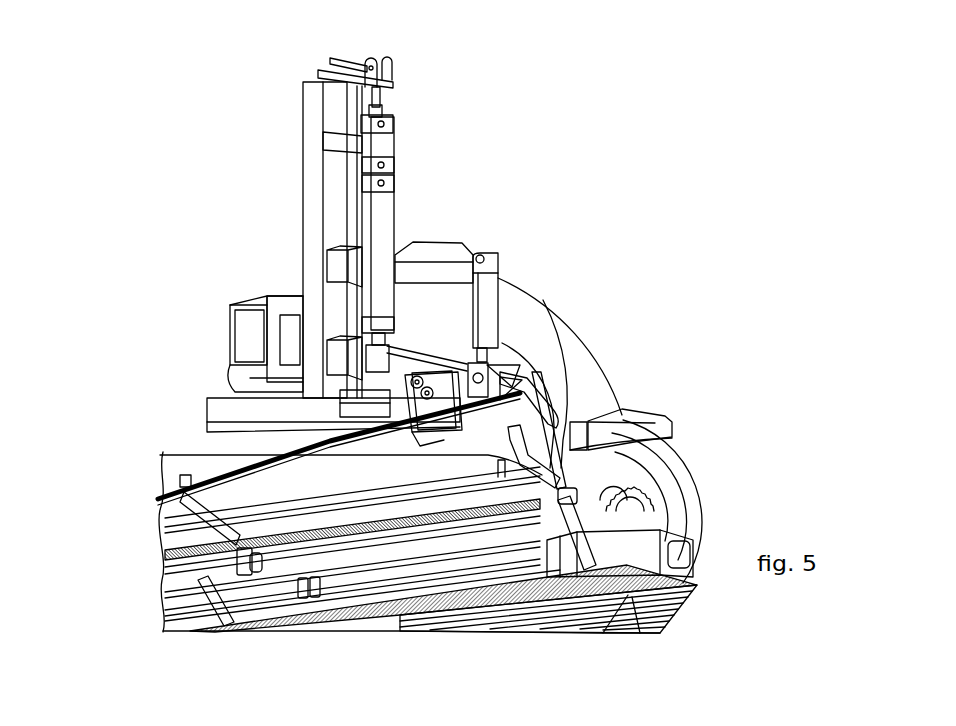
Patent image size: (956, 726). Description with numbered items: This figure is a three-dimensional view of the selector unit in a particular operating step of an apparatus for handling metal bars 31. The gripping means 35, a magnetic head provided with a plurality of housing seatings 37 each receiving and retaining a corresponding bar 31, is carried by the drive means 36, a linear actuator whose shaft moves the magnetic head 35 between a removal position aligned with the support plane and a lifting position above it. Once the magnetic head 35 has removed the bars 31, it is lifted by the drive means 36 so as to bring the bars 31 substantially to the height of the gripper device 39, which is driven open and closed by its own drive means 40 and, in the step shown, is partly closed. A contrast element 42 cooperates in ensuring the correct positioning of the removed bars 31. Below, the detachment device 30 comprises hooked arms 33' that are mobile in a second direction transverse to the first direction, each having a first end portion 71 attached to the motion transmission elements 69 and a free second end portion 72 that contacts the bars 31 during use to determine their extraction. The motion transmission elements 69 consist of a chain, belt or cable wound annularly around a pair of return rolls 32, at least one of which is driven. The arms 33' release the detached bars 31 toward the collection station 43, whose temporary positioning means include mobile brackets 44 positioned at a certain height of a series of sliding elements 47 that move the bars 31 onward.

The detachment device 30 is at (141, 538).
The bars 31 is at (220, 482).
The return rolls 32 is at (640, 521).
The arms 33' is at (375, 461).
The gripping means 35 is at (385, 437).
The drive means 36 is at (384, 225).
The housing seatings 37 is at (404, 172).
The gripper device 39 is at (456, 382).
The drive means 40 is at (490, 303).
The contrast element 42 is at (527, 387).
The collection station 43 is at (704, 578).
The mobile brackets 44 is at (627, 618).
The sliding elements 47 is at (217, 612).
The motion transmission elements 69 is at (302, 540).
The first end portion 71 is at (565, 490).
The second end portion 72 is at (542, 473).